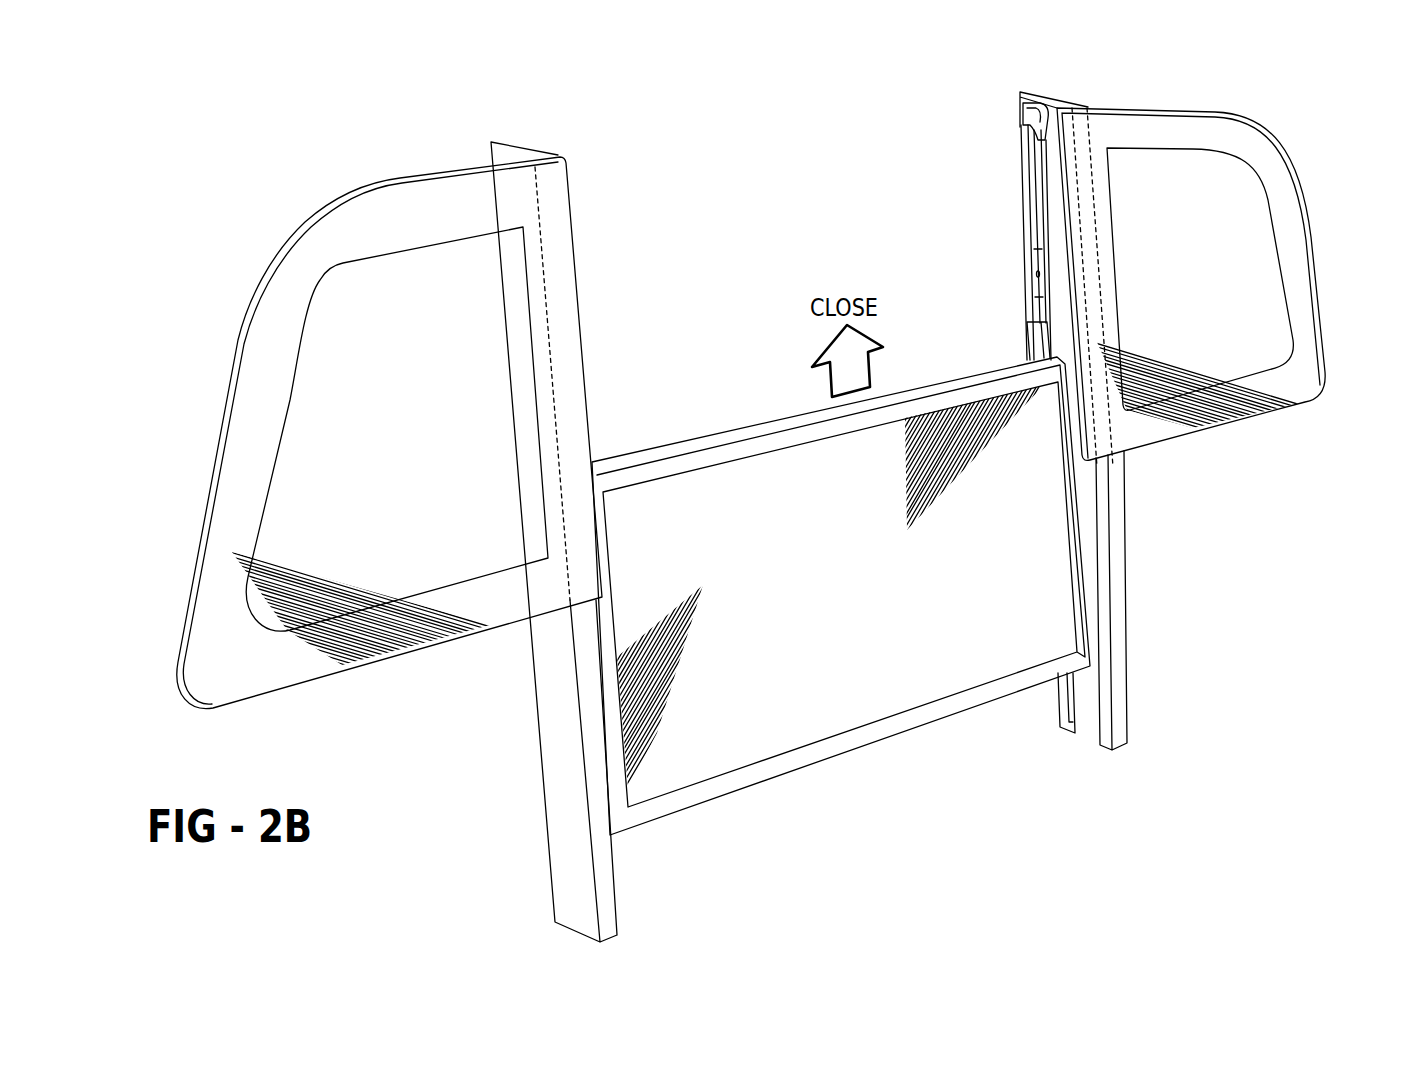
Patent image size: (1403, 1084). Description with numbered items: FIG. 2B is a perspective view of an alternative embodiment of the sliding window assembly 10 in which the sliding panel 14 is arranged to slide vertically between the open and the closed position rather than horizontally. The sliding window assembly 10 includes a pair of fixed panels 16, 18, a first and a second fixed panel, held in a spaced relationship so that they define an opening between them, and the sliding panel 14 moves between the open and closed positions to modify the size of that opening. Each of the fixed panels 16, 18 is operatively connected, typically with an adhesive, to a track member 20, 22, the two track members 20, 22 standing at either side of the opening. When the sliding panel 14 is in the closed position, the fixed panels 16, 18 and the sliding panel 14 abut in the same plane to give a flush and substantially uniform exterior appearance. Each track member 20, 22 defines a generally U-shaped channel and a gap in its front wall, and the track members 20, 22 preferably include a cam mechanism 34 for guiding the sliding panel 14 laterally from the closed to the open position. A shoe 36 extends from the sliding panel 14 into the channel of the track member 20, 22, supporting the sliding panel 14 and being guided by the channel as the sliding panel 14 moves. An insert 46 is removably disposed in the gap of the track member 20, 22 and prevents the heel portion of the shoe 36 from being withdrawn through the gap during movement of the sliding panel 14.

The sliding window assembly 10 is at (386, 151).
The sliding panel 14 is at (832, 760).
The fixed panel 16 is at (308, 283).
The fixed panel 18 is at (1224, 168).
The track member 20 is at (1110, 650).
The track member 22 is at (588, 742).
The cam mechanism 34 is at (1021, 108).
The shoe 36 is at (1016, 311).
The insert 46 is at (1031, 259).